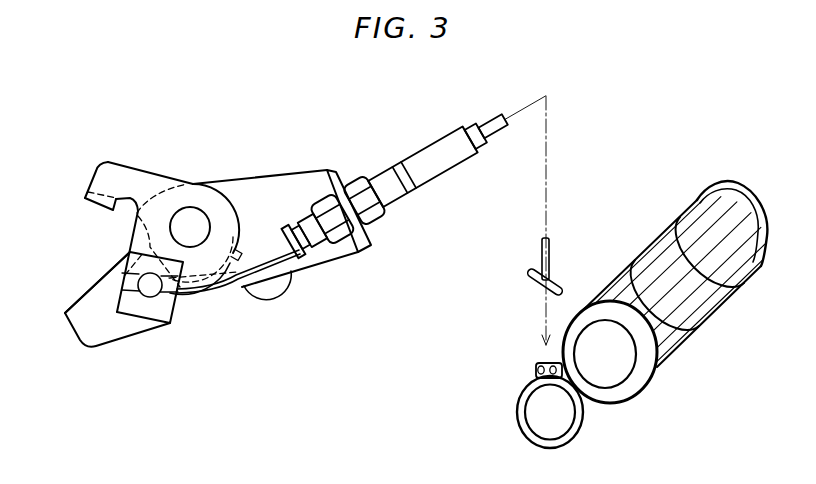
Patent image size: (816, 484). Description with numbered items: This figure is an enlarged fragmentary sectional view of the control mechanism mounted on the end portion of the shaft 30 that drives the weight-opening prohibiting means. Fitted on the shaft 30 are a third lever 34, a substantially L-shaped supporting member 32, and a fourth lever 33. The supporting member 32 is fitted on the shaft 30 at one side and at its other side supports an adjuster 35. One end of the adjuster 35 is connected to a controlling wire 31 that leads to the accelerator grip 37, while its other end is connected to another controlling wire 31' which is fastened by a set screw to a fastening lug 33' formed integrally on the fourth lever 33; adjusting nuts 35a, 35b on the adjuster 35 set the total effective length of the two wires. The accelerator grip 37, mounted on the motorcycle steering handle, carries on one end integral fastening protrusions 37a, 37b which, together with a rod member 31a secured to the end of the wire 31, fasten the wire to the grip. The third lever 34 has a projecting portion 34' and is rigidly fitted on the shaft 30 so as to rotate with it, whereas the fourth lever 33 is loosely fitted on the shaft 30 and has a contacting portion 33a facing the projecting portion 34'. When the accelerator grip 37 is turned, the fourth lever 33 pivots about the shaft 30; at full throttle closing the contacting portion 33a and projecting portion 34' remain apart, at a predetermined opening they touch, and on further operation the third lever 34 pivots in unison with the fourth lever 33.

The shaft 30 is at (185, 212).
The controlling wire 31 is at (553, 204).
The rod member 31a is at (533, 287).
The controlling wire 31' is at (244, 293).
The supporting member 32 is at (268, 190).
The fourth lever 33 is at (163, 212).
The contacting portion 33a is at (100, 208).
The fastening lug 33' is at (173, 310).
The third lever 34 is at (117, 328).
The projecting portion 34' is at (86, 282).
The adjuster 35 is at (446, 174).
The adjusting nut 35a is at (340, 243).
The adjusting nut 35b is at (381, 228).
The accelerator grip 37 is at (673, 370).
The fastening protrusion 37a is at (535, 372).
The fastening protrusion 37b is at (586, 410).